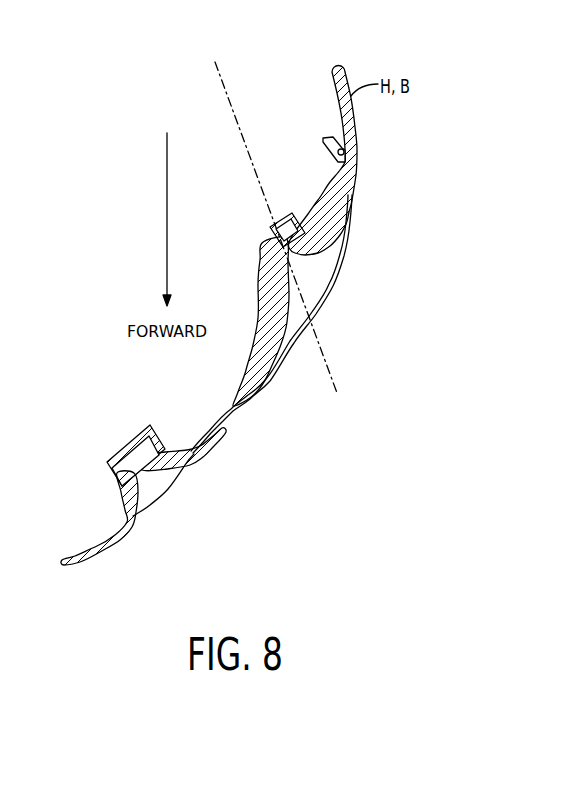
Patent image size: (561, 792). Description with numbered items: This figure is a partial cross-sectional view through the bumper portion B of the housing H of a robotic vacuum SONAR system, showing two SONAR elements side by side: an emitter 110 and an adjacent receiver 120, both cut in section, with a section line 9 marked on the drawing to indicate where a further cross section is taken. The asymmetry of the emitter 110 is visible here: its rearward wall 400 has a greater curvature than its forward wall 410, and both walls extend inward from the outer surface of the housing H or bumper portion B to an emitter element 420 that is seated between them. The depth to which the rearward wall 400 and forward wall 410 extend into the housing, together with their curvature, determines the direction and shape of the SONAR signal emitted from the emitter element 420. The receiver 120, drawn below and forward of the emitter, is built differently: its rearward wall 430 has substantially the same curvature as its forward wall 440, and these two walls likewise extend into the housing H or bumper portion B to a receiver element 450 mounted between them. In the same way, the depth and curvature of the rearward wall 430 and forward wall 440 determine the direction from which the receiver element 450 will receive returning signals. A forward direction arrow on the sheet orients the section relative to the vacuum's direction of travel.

The section line 9- 9 is at (215, 62).
The rearward wall 400 is at (328, 247).
The forward wall 410 is at (278, 348).
The emitter element 420 is at (279, 223).
The rearward wall 430 is at (196, 465).
The forward wall 440 is at (129, 524).
The receiver element 450 is at (128, 458).
The emitter 110 is at (310, 277).
The receiver 120 is at (157, 487).